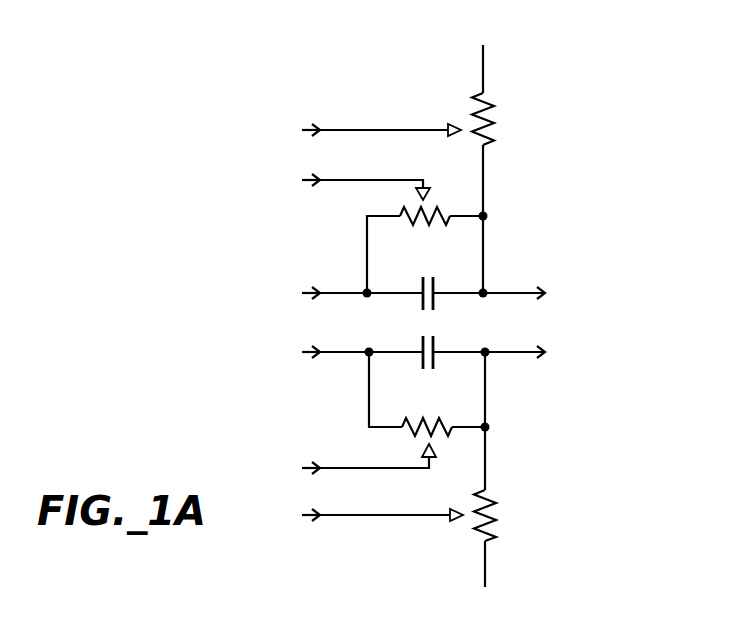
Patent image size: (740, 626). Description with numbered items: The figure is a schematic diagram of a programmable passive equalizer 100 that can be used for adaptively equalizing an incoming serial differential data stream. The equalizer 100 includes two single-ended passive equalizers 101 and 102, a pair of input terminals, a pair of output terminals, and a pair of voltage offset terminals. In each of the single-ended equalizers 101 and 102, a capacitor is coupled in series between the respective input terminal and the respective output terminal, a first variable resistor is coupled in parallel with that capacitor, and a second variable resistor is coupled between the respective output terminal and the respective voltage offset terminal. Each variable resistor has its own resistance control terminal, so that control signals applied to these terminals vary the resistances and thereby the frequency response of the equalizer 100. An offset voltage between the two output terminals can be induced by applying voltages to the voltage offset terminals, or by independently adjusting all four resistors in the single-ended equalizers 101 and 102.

The equalizer 100 is at (592, 78).
The single-ended passive equalizer 101 is at (543, 200).
The single-ended passive equalizer 102 is at (545, 426).